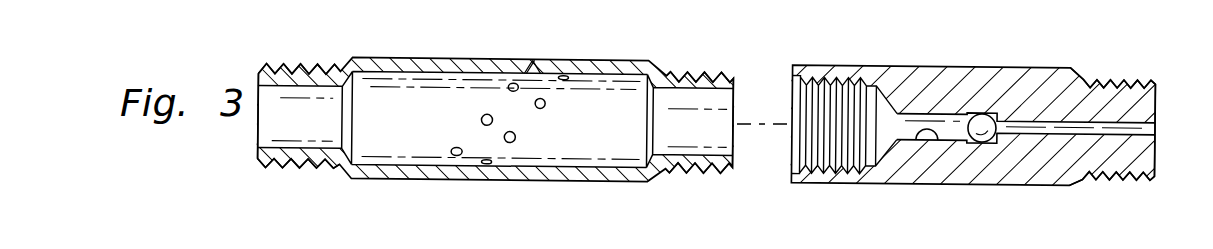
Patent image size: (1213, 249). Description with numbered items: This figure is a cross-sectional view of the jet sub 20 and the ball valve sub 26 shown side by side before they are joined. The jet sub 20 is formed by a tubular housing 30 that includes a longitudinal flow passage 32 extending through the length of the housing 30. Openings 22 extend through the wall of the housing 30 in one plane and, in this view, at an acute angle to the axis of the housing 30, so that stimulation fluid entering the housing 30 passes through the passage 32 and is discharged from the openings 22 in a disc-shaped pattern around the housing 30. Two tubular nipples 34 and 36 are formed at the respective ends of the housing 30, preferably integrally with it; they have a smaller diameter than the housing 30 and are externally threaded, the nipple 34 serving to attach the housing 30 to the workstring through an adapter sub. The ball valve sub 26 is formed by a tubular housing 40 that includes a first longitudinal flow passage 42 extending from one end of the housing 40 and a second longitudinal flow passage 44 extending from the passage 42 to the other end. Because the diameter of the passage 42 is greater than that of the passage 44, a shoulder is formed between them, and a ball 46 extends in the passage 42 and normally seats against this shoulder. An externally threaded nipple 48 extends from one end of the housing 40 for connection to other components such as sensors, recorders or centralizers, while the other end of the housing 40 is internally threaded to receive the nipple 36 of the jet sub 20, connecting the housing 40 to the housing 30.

The jet sub 20 is at (464, 51).
The openings 22 is at (536, 59).
The ball valve sub 26 is at (917, 57).
The tubular housing 30 is at (589, 61).
The longitudinal flow passage 32 is at (441, 131).
The tubular nipple 34 is at (294, 64).
The tubular nipple 36 is at (698, 69).
The tubular housing 40 is at (981, 67).
The first longitudinal flow passage 42 is at (940, 148).
The second longitudinal flow passage 44 is at (1157, 132).
The ball 46 is at (973, 109).
The externally threaded nipple 48 is at (1131, 78).